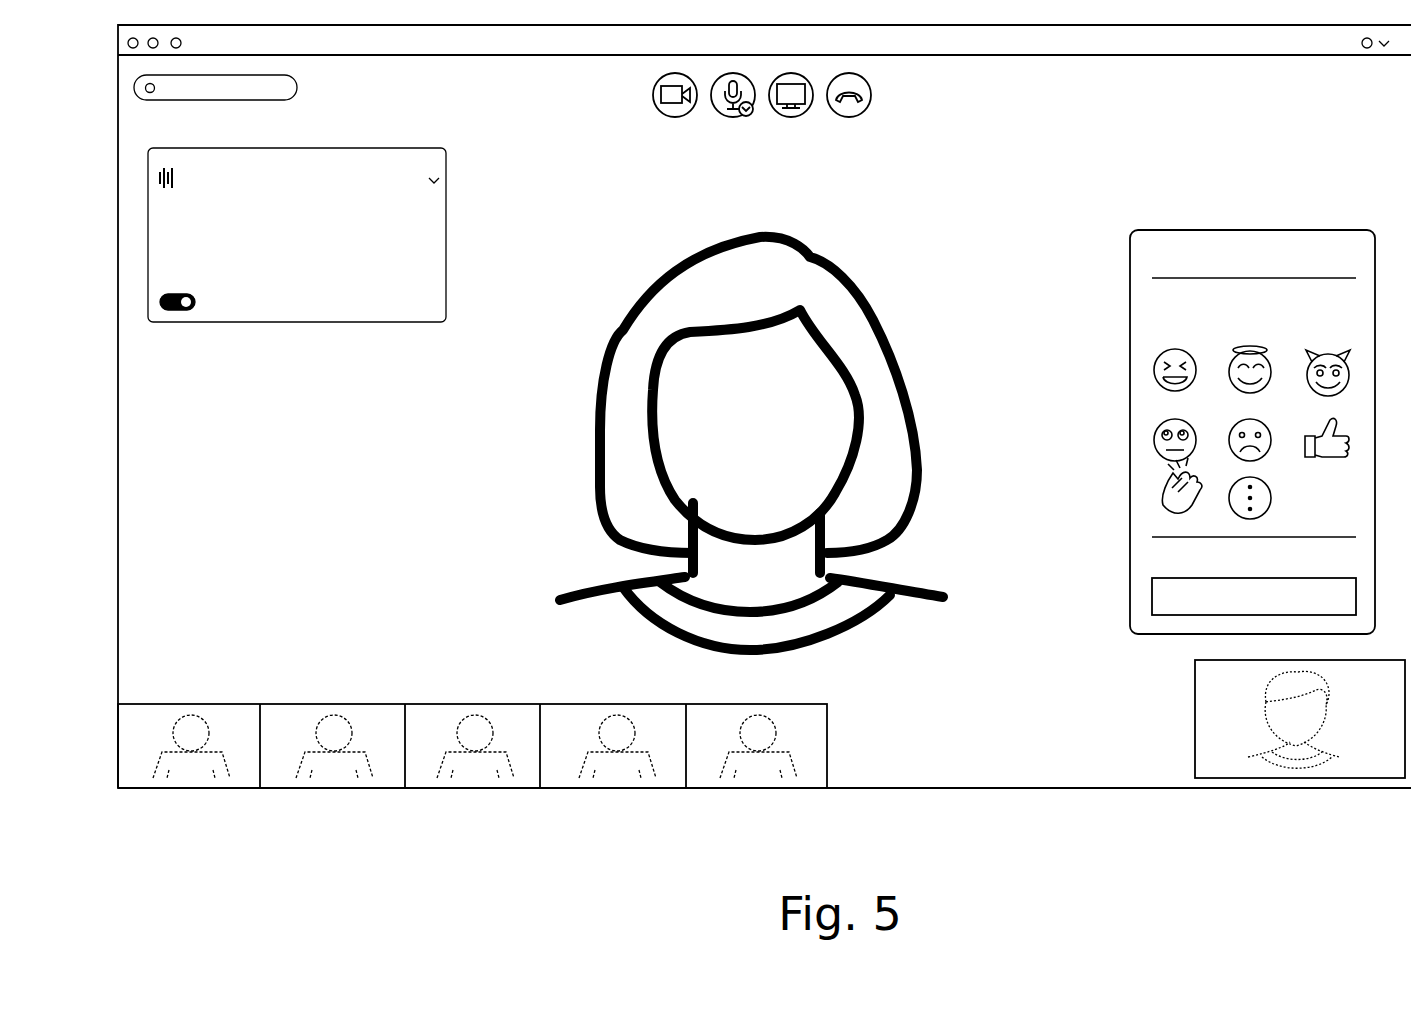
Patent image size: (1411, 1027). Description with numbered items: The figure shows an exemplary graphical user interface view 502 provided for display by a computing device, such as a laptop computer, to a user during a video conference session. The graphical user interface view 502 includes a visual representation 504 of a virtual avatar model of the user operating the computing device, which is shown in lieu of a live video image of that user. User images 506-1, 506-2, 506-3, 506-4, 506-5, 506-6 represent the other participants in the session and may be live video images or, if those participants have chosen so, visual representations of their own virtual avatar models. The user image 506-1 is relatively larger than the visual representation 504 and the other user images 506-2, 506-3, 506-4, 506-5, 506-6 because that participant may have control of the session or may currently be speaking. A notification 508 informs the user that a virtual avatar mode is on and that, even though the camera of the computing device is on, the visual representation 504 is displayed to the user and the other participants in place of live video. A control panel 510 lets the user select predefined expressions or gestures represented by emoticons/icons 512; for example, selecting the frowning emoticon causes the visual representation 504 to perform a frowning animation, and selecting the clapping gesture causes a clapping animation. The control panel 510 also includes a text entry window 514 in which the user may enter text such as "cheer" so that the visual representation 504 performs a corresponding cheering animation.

The graphical user interface view 502 is at (972, 788).
The visual representation 504 is at (1195, 722).
The user image 506-1 is at (560, 600).
The user image 506-2 is at (188, 788).
The user image 506-3 is at (330, 788).
The user image 506-4 is at (471, 788).
The user image 506-5 is at (614, 788).
The user image 506-6 is at (755, 788).
The notification 508 is at (287, 322).
The control panel 510 is at (1248, 230).
The emoticons/icons 512 is at (1152, 347).
The text entry window 514 is at (1152, 595).